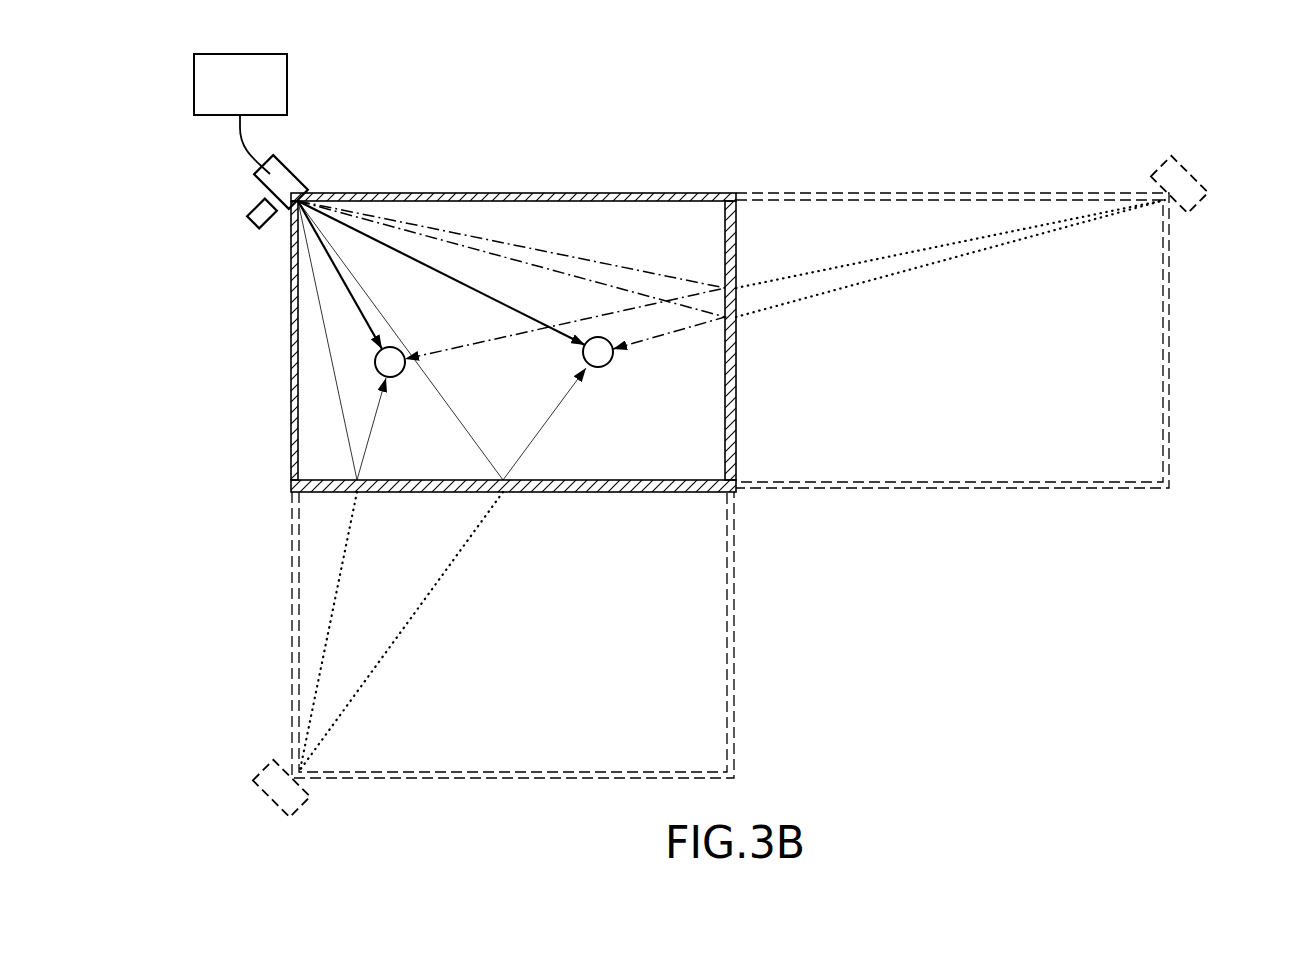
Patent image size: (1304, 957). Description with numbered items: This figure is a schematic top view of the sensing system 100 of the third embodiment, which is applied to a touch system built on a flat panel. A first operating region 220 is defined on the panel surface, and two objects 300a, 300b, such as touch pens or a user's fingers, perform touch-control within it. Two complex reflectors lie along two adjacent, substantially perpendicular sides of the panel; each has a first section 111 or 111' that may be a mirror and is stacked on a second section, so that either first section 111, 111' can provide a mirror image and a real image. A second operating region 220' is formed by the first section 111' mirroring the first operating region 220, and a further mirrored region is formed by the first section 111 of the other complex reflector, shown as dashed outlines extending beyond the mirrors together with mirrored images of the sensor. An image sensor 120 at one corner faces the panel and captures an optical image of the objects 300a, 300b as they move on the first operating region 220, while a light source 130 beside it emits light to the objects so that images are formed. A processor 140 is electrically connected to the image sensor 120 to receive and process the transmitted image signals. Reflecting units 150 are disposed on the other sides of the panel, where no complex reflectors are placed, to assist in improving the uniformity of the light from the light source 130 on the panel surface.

The sensing system 100 is at (820, 111).
The processor 140 is at (221, 98).
The image sensor 120 is at (295, 173).
The light source 130 is at (257, 228).
The reflecting unit 150 is at (571, 193).
The first section 111 is at (768, 340).
The first section 111' is at (513, 523).
The first operating region 220 is at (511, 310).
The second operating region 220' is at (536, 654).
The object 300a is at (605, 364).
The object 300b is at (398, 374).